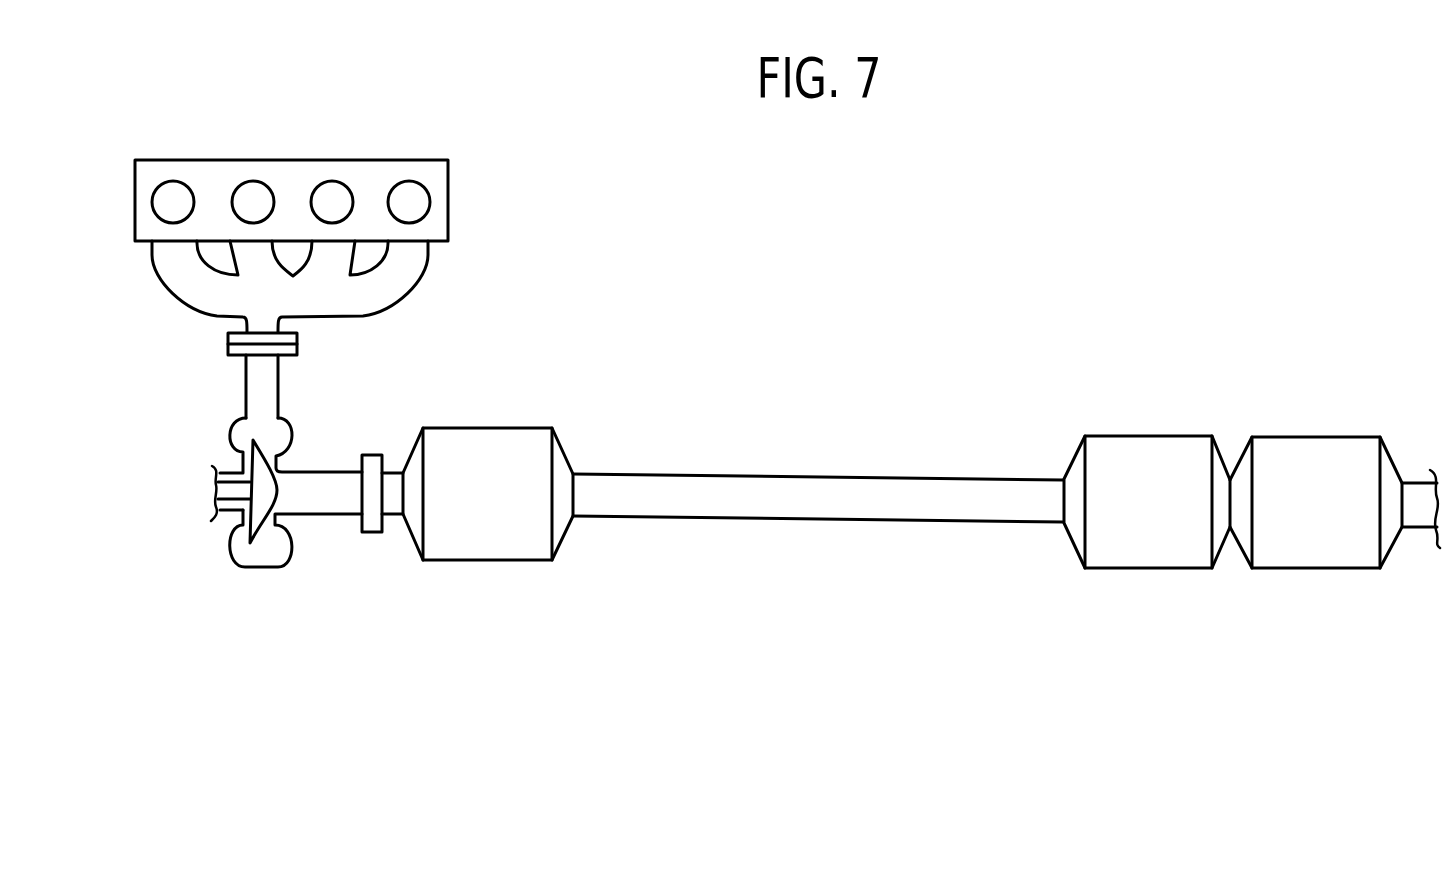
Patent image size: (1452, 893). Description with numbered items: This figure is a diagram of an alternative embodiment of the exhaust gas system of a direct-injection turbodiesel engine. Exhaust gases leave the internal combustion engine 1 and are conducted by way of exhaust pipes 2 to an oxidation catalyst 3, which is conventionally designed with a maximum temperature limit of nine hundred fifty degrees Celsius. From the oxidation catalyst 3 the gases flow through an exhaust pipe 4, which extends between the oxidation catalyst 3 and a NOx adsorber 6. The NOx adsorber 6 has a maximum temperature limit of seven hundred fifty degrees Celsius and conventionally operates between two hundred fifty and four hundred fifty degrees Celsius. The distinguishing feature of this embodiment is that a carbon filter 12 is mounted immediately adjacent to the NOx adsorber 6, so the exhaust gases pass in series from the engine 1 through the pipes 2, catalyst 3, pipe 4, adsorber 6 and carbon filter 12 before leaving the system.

The internal combustion engine 1 is at (440, 207).
The exhaust pipes 2 is at (253, 372).
The oxidation catalyst 3 is at (520, 438).
The exhaust pipe 4 is at (856, 508).
The NOx adsorber 6 is at (1152, 447).
The carbon filter 12 is at (1315, 448).